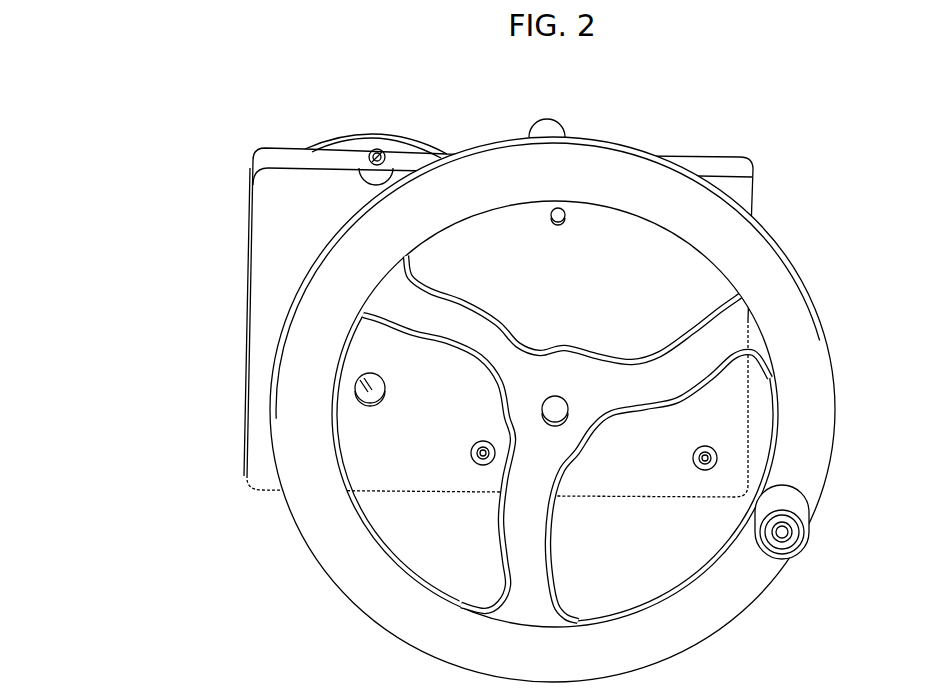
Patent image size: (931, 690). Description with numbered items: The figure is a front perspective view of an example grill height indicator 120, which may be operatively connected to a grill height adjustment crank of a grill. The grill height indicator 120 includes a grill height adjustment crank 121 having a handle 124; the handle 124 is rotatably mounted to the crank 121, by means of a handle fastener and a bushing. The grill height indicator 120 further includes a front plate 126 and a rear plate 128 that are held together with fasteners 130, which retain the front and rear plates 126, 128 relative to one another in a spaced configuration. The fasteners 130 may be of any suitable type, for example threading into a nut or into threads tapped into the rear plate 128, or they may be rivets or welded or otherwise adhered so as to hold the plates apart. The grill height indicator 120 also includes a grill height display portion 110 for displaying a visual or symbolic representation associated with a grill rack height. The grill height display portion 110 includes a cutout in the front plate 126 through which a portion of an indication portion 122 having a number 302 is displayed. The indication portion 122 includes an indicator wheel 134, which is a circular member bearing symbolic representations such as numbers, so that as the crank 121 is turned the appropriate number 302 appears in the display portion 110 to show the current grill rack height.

The grill height display portion 110 is at (345, 155).
The grill height indicator 120 is at (197, 218).
The grill height adjustment crank 121 is at (797, 273).
The indication portion 122 is at (380, 137).
The handle 124 is at (807, 510).
The front plate 126 is at (248, 330).
The rear plate 128 is at (697, 155).
The fasteners 130 is at (358, 190).
The indicator wheel 134 is at (350, 158).
The number 302 is at (385, 155).